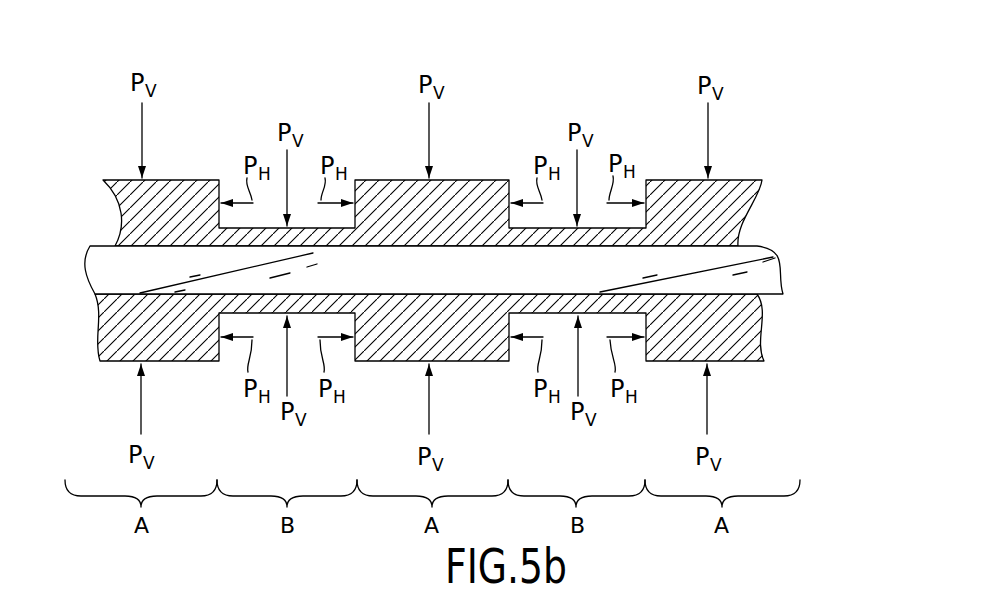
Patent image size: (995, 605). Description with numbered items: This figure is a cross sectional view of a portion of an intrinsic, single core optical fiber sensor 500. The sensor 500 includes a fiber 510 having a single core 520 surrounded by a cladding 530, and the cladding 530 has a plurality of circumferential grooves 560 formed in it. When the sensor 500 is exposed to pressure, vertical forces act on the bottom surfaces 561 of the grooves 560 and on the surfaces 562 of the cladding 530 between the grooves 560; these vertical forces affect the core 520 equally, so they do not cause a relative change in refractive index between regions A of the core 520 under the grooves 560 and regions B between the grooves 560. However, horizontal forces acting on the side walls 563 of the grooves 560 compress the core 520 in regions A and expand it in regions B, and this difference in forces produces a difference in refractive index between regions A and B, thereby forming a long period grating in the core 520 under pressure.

The sensor 500 is at (683, 55).
The fiber 510 is at (108, 177).
The core 520 is at (757, 247).
The cladding 530 is at (765, 319).
The grooves 560 is at (323, 132).
The bottom surfaces 561 is at (255, 303).
The surfaces 562 is at (178, 180).
The side walls 563 is at (218, 213).